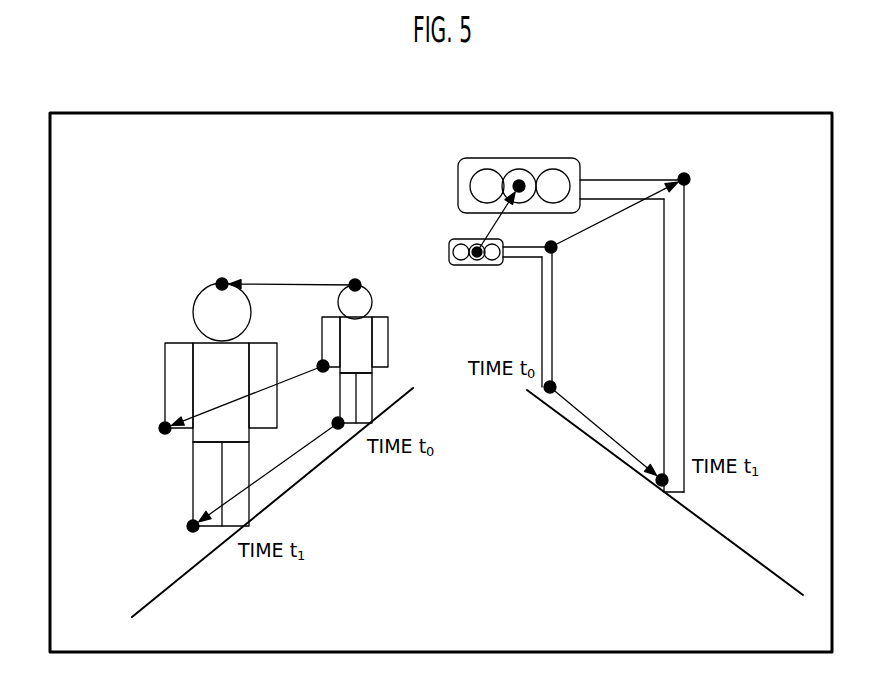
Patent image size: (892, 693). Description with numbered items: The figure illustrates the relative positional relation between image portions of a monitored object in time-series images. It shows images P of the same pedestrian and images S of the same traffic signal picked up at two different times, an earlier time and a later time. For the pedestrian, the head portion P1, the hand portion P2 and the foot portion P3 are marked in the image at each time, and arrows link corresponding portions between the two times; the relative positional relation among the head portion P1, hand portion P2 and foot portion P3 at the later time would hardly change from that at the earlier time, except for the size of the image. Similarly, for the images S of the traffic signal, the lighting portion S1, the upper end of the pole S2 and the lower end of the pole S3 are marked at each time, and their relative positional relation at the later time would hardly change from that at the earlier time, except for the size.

The images of pedestrian P is at (177, 362).
The images of traffic signal S is at (672, 319).
The head portion P1 is at (292, 272).
The hand portion P2 is at (211, 379).
The foot portion P3 is at (232, 477).
The lighting portion S1 is at (500, 212).
The upper end of the pole S2 is at (650, 220).
The lower end of the pole S3 is at (606, 438).